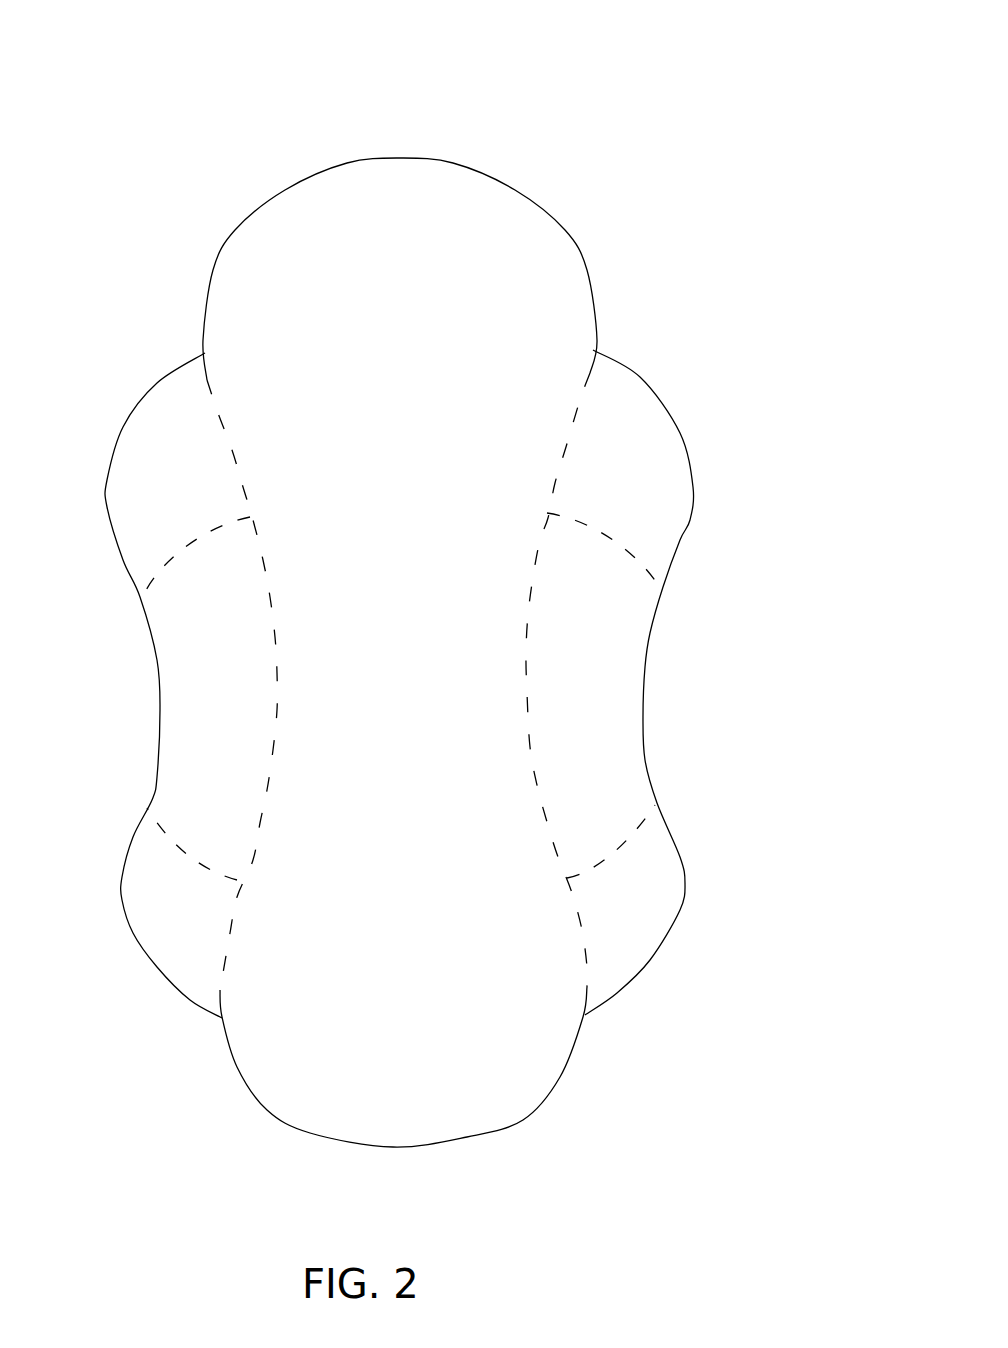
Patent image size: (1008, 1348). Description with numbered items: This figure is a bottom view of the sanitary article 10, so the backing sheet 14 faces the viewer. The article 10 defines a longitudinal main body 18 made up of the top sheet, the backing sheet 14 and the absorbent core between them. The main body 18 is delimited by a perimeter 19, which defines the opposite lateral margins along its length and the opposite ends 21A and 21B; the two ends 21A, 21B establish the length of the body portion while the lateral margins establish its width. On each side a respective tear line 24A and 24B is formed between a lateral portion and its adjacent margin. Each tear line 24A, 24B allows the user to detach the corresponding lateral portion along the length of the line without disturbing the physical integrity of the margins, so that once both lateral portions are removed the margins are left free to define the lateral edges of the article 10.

The sanitary article 10 is at (582, 80).
The backing sheet 14 is at (400, 472).
The longitudinal main body 18 is at (289, 133).
The perimeter 19 is at (397, 159).
The end 21A is at (285, 190).
The end 21B is at (377, 1147).
The tear line 24A is at (270, 602).
The tear line 24B is at (527, 707).